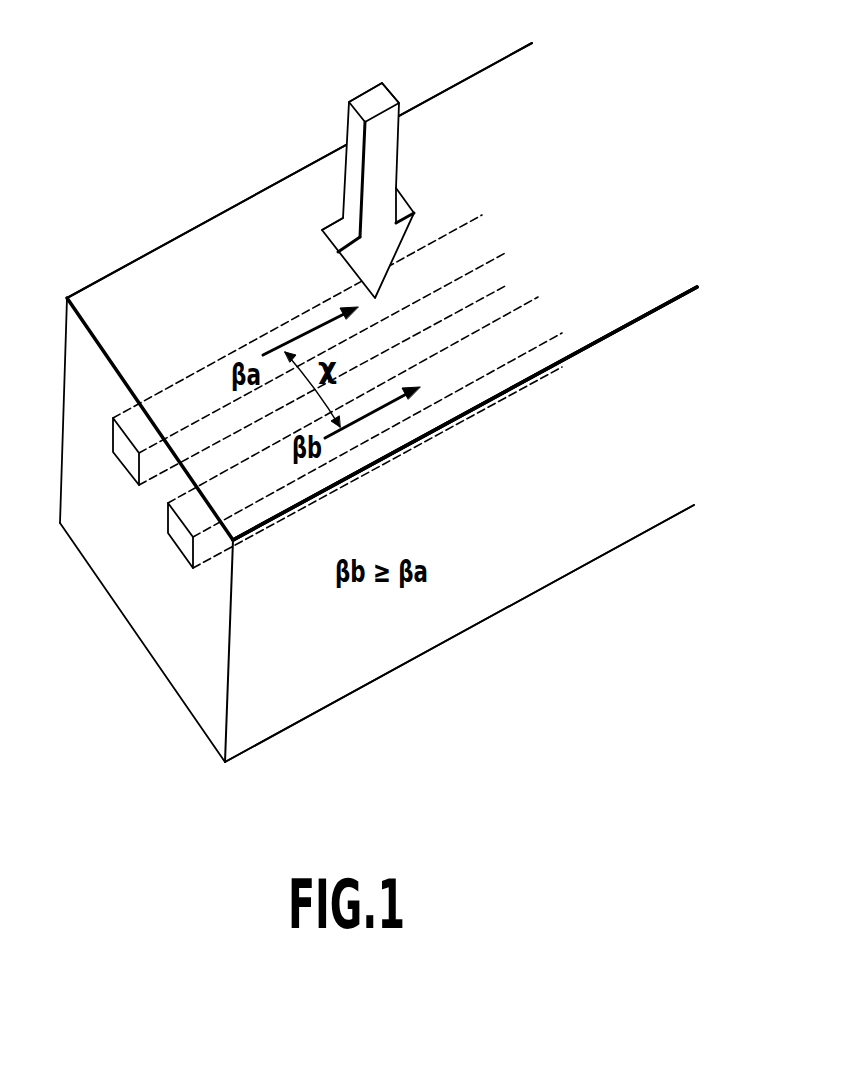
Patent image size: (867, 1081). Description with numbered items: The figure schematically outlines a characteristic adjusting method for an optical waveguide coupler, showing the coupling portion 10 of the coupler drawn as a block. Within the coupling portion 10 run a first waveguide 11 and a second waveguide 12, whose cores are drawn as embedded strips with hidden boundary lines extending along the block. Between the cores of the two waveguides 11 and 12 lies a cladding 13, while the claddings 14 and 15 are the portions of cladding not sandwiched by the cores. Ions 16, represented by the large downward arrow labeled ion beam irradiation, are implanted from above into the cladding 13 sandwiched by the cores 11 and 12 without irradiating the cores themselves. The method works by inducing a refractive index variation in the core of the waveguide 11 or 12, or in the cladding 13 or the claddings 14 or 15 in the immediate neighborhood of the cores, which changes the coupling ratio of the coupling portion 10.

The coupling portion 10 is at (178, 238).
The first waveguide 11 is at (122, 448).
The second waveguide 12 is at (180, 533).
The cladding 13 is at (478, 322).
The cladding 14 is at (602, 384).
The cladding 15 is at (498, 137).
The ions 16 is at (383, 165).